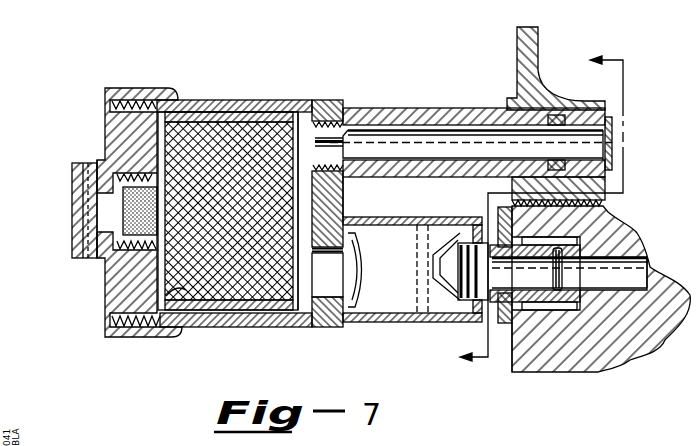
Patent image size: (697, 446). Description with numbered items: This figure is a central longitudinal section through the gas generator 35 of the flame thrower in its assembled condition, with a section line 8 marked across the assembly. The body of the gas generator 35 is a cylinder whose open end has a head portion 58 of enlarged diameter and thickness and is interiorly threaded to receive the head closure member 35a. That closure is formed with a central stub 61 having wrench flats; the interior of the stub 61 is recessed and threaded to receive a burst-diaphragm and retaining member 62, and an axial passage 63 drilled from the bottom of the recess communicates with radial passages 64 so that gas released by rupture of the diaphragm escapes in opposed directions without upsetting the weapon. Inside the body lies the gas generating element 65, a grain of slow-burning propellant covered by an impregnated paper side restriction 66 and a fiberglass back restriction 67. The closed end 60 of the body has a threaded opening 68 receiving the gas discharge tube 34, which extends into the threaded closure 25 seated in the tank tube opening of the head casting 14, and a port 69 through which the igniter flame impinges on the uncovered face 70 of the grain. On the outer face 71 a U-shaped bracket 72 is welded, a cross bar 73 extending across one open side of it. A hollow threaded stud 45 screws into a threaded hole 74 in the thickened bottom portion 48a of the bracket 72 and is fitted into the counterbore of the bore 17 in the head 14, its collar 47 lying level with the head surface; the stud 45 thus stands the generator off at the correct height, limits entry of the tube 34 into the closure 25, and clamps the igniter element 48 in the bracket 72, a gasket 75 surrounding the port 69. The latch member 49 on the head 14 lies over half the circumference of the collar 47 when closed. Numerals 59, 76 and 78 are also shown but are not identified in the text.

The section line 8- 8 is at (532, 211).
The head casting 14 is at (561, 336).
The bore 17 is at (640, 243).
The threaded closure 25 is at (515, 43).
The gas delivery tube 34 is at (423, 108).
The gas generator 35 is at (219, 101).
The head closure member 35a is at (105, 131).
The hollow threaded stud 45 is at (497, 312).
The collar 47 is at (513, 347).
The igniter element 48 is at (383, 280).
The bottom portion of stirrup 48a is at (418, 239).
The latch member 49 is at (498, 215).
The head portion 58 is at (134, 337).
The end cap 59 is at (105, 102).
The closed end 60 is at (328, 110).
The central stub 61 is at (72, 192).
The burst-diaphragm and retaining member 62 is at (102, 263).
The axial passage 63 is at (105, 215).
The radial passages 64 is at (90, 170).
The gas generating element 65 is at (221, 221).
The side restriction 66 is at (190, 120).
The back restriction 67 is at (183, 293).
The opening 68 is at (311, 99).
The port 69 is at (319, 280).
The uncovered face 70 is at (305, 118).
The outer face 71 is at (343, 199).
The bracket 72 is at (385, 216).
The cross bar 73 is at (417, 297).
The threaded hole 74 is at (457, 310).
The gasket 75 is at (345, 292).
The groove 76 is at (578, 237).
The cross pin 78 is at (578, 311).